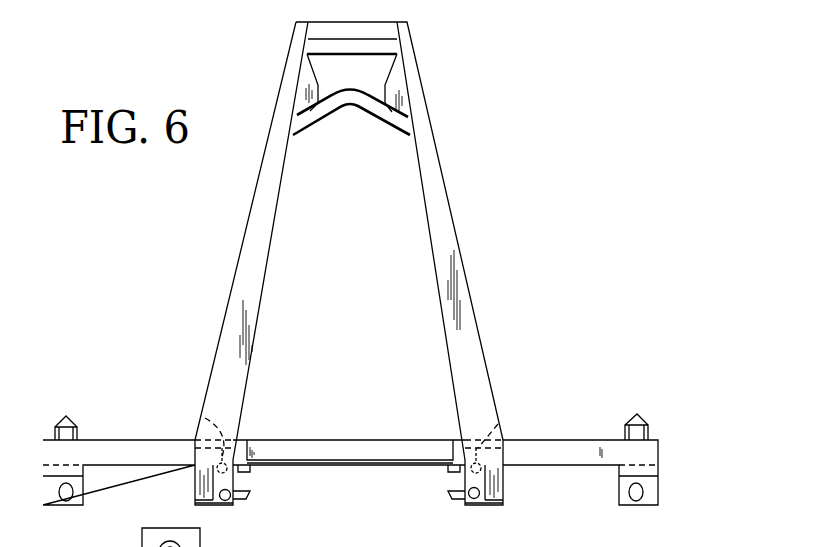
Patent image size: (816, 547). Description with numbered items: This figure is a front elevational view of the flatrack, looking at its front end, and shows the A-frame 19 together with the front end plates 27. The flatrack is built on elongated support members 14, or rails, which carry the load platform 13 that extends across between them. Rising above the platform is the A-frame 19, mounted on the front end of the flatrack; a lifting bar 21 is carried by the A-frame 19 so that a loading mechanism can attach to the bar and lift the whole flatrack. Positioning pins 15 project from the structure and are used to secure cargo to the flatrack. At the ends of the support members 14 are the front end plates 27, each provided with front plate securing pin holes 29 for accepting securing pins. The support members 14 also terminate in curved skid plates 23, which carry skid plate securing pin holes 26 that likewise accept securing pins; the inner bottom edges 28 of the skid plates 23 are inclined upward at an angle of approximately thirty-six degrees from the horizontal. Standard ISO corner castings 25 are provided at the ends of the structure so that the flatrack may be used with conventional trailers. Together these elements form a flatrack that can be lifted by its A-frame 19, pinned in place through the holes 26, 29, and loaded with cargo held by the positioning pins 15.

The load platform 13 is at (377, 447).
The support members 14 is at (226, 505).
The positioning pins 15 is at (66, 416).
The A-frame 19 is at (476, 306).
The lifting bar 21 is at (368, 113).
The skid plates 23 is at (196, 485).
The ISO corner castings 25 is at (43, 492).
The skid plate securing pin holes 26 is at (205, 418).
The front end plates 27 is at (242, 481).
The inner bottom edges 28 is at (248, 498).
The front plate securing pin holes 29 is at (196, 501).